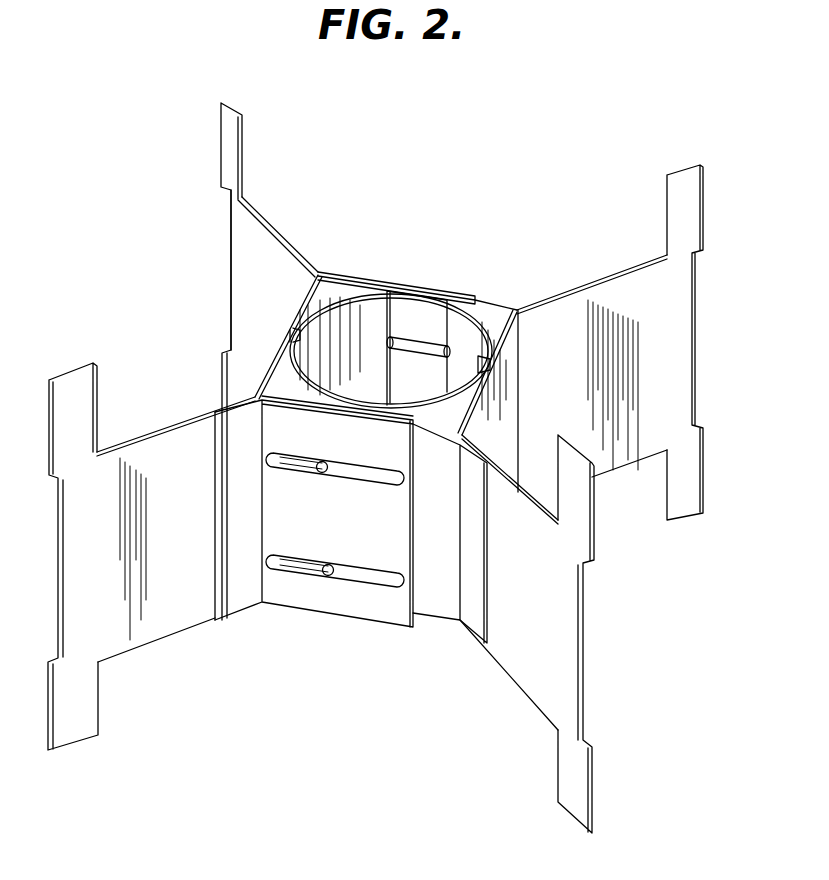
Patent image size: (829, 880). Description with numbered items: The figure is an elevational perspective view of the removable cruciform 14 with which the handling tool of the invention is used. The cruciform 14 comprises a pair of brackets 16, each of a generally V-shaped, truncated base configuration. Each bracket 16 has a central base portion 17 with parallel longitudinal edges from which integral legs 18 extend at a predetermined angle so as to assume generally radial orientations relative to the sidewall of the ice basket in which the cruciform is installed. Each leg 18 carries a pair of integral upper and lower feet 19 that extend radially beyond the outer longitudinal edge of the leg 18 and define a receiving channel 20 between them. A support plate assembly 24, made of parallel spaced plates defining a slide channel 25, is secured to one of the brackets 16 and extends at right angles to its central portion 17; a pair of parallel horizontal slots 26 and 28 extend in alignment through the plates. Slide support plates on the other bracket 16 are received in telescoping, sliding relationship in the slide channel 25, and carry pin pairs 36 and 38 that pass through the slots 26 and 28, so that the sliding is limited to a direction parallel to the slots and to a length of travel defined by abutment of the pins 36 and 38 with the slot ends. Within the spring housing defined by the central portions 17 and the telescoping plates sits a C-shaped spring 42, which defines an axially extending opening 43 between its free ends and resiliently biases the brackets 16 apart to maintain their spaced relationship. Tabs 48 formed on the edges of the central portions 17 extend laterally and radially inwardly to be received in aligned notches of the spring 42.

The removable cruciform 14 is at (160, 274).
The bracket 16 is at (197, 390).
The central base portion 17 is at (292, 337).
The leg 18 is at (268, 222).
The foot 19 is at (231, 142).
The receiving channel 20 is at (228, 238).
The support plate assembly 24 is at (462, 298).
The slide channel 25 is at (490, 300).
The horizontal slot 26 is at (335, 485).
The horizontal slot 28 is at (357, 590).
The pin pair 36 is at (385, 470).
The pin pair 38 is at (393, 575).
The C-shaped spring 42 is at (352, 292).
The axially extending opening 43 is at (420, 320).
The tab 48 is at (293, 330).